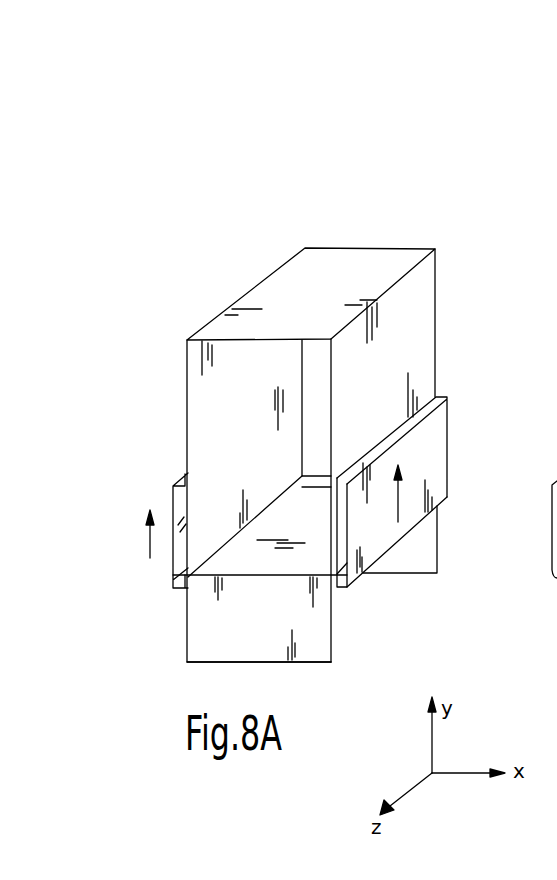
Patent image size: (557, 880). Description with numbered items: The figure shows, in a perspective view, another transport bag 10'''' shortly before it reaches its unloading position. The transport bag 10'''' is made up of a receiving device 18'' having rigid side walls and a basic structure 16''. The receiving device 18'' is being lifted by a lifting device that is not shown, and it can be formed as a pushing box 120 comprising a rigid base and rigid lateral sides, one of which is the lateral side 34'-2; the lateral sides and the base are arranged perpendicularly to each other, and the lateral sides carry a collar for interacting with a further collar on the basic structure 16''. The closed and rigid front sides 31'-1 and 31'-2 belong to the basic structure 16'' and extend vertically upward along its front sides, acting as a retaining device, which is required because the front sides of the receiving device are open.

The transport bag 10'''' is at (271, 389).
The basic structure 16'' is at (364, 450).
The receiving device 18'' is at (433, 480).
The pushing box 120 is at (171, 492).
The front side 31'-1 is at (226, 618).
The front side 31'-2 is at (409, 586).
The lateral side 34'-2 is at (524, 530).